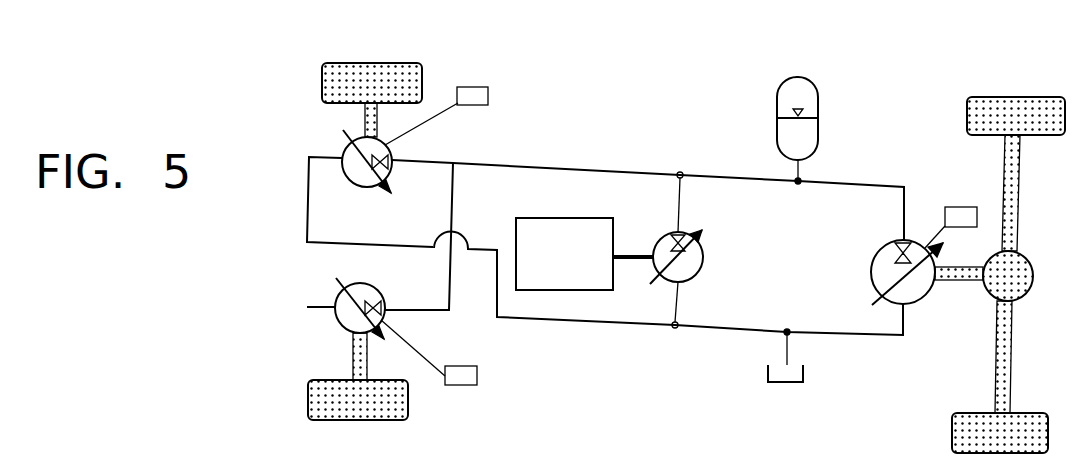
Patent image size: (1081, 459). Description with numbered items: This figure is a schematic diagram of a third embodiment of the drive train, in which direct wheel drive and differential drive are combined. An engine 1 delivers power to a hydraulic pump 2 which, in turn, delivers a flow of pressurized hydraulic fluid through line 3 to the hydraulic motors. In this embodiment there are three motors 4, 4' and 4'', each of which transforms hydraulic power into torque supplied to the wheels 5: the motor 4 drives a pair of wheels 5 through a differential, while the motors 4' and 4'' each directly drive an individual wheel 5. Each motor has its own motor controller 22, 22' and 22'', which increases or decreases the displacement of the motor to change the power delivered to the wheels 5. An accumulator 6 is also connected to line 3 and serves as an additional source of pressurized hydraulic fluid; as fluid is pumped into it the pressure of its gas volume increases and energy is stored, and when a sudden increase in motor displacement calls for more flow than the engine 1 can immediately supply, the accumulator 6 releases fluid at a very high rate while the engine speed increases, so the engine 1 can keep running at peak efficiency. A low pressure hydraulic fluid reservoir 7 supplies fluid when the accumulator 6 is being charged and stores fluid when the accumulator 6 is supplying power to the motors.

The engine 1 is at (557, 290).
The hydraulic pump 2 is at (690, 268).
The line 3 is at (580, 168).
The hydraulic motor 4 is at (907, 299).
The hydraulic motor 4' is at (325, 154).
The hydraulic motor 4'' is at (326, 312).
The wheels 5 is at (337, 85).
The accumulator 6 is at (795, 95).
The low pressure hydraulic fluid reservoir 7 is at (770, 380).
The motor controller 22 is at (951, 195).
The motor controller 22' is at (477, 116).
The motor controller 22'' is at (459, 360).